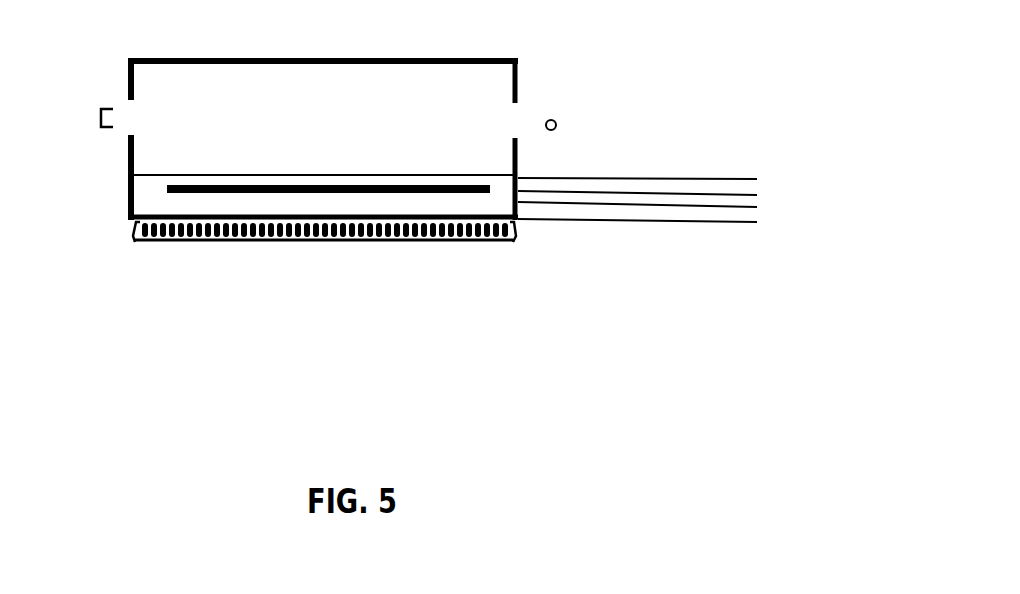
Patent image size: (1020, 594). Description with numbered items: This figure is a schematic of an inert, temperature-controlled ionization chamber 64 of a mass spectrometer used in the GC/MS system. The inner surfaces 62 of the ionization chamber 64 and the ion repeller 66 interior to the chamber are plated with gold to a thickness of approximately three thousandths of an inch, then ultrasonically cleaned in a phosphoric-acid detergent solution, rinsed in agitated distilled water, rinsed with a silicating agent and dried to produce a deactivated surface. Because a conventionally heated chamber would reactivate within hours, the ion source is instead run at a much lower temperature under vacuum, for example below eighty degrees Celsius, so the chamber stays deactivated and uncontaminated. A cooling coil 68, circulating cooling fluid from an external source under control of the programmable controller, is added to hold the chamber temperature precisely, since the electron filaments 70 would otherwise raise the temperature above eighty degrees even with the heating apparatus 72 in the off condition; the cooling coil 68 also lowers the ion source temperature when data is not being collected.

The inner surfaces 62 is at (273, 62).
The ionization chamber 64 is at (84, 364).
The ion repeller 66 is at (292, 185).
The cooling coil 68 is at (614, 206).
The electron filaments 70 is at (555, 120).
The heating apparatus 72 is at (300, 246).